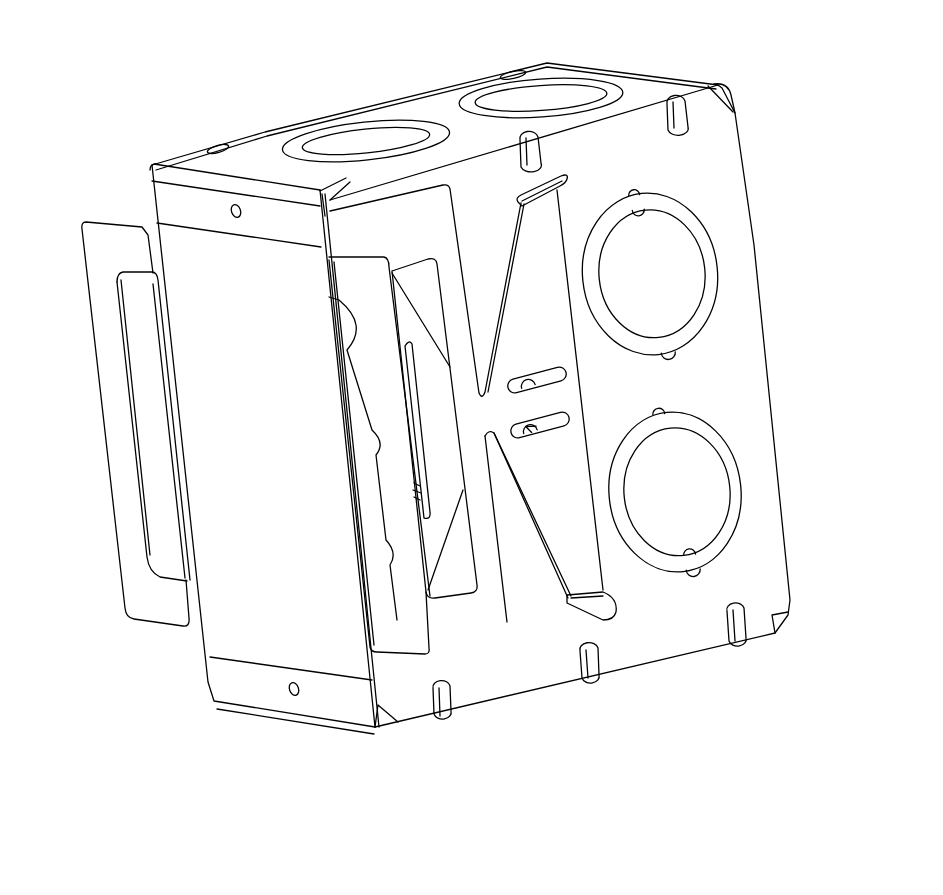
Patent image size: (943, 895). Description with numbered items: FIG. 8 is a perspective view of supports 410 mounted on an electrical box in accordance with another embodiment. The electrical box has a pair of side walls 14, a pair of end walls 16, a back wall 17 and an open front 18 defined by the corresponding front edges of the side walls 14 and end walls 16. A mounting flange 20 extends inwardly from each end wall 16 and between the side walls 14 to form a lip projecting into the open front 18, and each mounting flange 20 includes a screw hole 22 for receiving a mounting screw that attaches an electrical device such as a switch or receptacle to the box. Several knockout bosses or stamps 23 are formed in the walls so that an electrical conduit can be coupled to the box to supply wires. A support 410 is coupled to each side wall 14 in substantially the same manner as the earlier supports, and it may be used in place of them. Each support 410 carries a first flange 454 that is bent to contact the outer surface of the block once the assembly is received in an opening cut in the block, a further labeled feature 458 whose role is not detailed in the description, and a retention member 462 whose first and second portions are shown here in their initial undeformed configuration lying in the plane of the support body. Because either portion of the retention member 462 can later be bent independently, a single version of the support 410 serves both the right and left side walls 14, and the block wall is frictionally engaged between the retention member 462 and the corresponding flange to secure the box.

The support 410 is at (107, 216).
The side wall 14 is at (178, 325).
The end wall 16 is at (245, 150).
The back wall 17 is at (733, 99).
The open front 18 is at (190, 490).
The mounting flange 20 is at (188, 213).
The screw hole 22 is at (237, 221).
The knockout boss 23 is at (345, 150).
The first flange 454 is at (117, 422).
The flap 458 is at (450, 497).
The retention member 462 is at (584, 392).